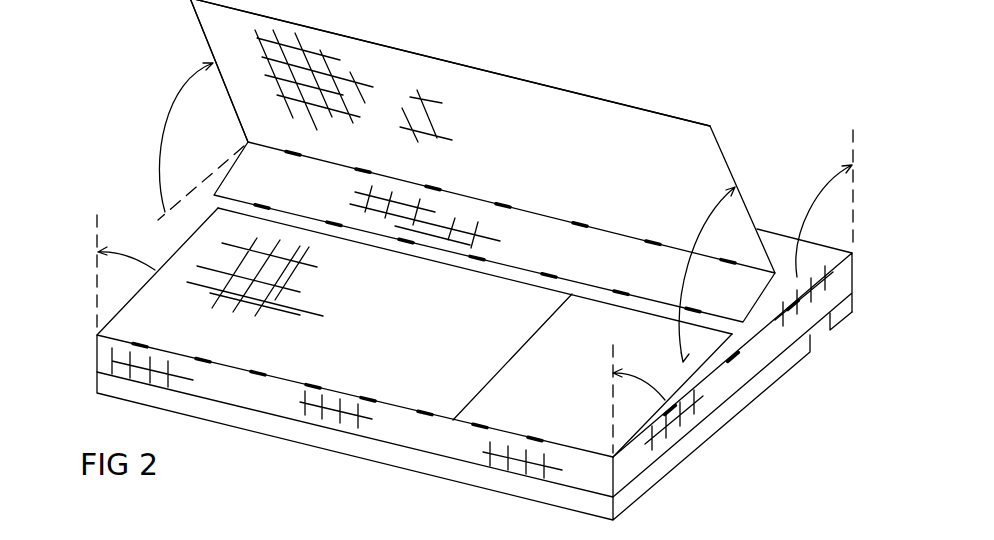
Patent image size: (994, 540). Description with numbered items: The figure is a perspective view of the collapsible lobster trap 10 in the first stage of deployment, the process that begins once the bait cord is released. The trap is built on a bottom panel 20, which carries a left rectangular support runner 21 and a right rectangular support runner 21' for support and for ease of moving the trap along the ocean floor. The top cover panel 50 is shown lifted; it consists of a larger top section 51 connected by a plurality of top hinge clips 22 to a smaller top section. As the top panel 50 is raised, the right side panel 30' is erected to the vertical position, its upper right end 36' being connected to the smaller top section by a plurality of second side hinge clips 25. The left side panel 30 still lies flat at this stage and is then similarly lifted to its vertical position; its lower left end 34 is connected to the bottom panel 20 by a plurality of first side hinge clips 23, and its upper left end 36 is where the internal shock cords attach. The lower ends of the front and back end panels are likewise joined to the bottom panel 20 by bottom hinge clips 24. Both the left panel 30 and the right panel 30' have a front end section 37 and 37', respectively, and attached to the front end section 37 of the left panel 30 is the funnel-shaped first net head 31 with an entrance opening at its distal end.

The collapsible lobster trap 10 is at (733, 87).
The bottom panel 20 is at (748, 372).
The left rectangular support runner 21 is at (453, 427).
The right rectangular support runner 21' is at (849, 332).
The top hinge clips 22 is at (655, 240).
The first side hinge clips 23 is at (365, 385).
The bottom hinge clips 24 is at (729, 362).
The second side hinge clips 25 is at (337, 222).
The left side panel 30 is at (355, 332).
The right side panel 30' is at (765, 269).
The first net head 31 is at (450, 63).
The lower left end 34 is at (100, 338).
The upper left end 36 is at (475, 271).
The upper right end 36' is at (466, 232).
The front end section 37 is at (592, 375).
The front end section 37' is at (820, 203).
The top cover panel 50 is at (611, 101).
The larger top section 51 is at (202, 38).